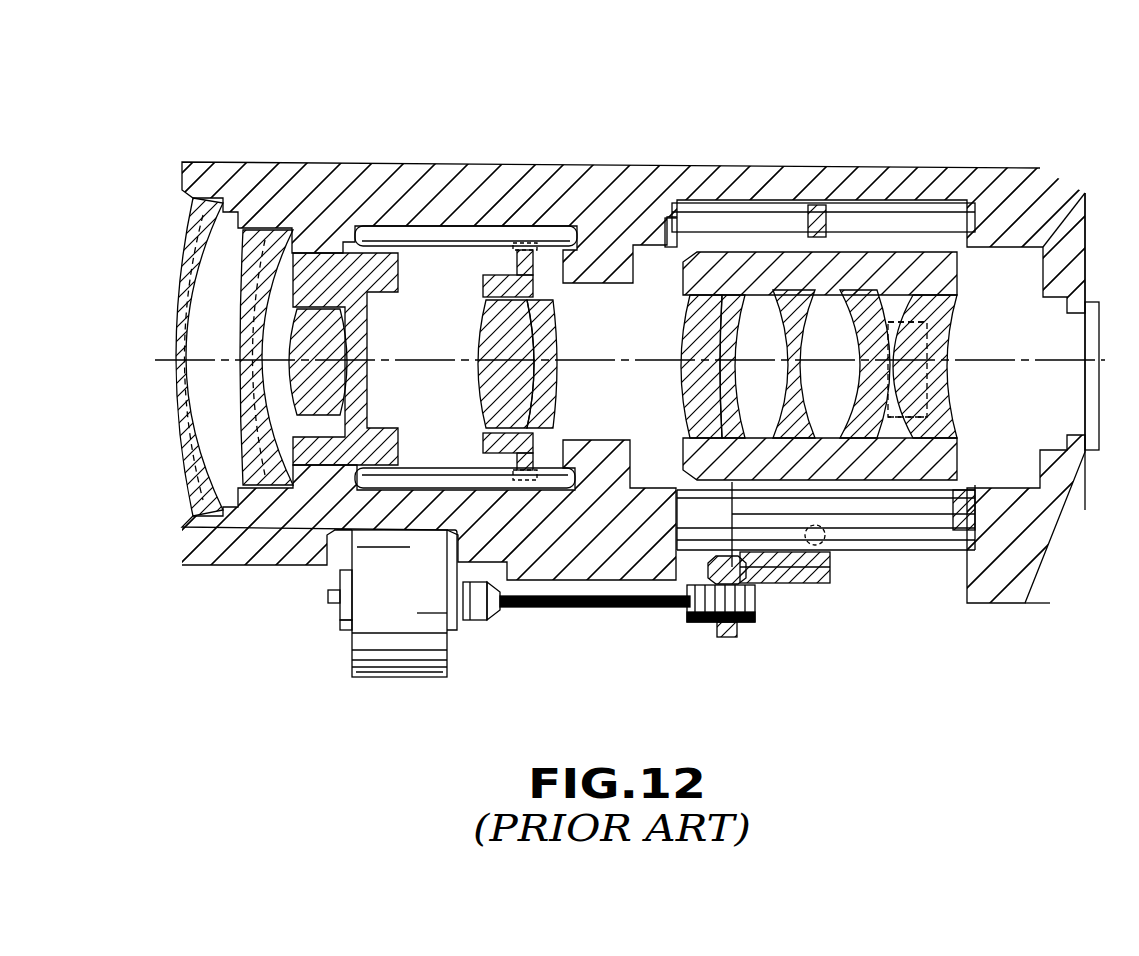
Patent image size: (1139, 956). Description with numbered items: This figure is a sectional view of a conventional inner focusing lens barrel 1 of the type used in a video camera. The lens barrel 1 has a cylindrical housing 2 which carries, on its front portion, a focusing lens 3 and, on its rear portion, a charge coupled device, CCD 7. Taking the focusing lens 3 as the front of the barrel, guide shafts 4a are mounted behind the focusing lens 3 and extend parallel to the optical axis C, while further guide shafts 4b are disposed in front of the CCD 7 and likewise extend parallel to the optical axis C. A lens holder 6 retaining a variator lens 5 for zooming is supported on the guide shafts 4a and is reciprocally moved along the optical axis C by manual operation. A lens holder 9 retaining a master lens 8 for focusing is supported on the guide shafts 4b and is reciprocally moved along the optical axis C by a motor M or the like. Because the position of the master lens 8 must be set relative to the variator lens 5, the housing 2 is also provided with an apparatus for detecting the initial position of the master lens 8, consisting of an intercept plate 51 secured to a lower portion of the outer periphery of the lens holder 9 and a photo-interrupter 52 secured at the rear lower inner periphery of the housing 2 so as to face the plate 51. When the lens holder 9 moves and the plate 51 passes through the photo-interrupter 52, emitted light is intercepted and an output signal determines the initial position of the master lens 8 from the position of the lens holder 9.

The inner focusing lens barrel 1 is at (541, 118).
The cylindrical housing 2 is at (632, 182).
The focusing lens 3 is at (196, 292).
The guide shafts 4a is at (430, 247).
The guide shafts 4b is at (937, 230).
The variator lens 5 is at (537, 311).
The lens holder 6 is at (533, 421).
The charge coupled device (CCD) 7 is at (1092, 310).
The master lens 8 is at (683, 331).
The lens holder 9 is at (887, 257).
The intercept plate 51 is at (923, 410).
The photo-interrupter 52 is at (923, 398).
The optical axis C is at (967, 363).
The motor M is at (437, 663).